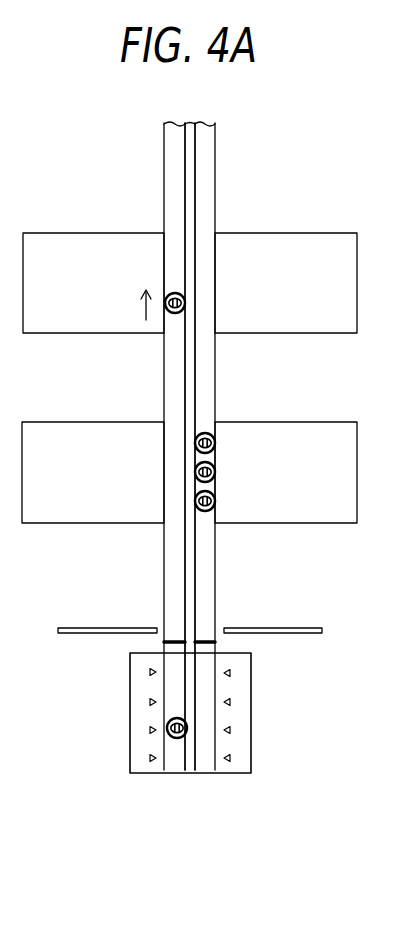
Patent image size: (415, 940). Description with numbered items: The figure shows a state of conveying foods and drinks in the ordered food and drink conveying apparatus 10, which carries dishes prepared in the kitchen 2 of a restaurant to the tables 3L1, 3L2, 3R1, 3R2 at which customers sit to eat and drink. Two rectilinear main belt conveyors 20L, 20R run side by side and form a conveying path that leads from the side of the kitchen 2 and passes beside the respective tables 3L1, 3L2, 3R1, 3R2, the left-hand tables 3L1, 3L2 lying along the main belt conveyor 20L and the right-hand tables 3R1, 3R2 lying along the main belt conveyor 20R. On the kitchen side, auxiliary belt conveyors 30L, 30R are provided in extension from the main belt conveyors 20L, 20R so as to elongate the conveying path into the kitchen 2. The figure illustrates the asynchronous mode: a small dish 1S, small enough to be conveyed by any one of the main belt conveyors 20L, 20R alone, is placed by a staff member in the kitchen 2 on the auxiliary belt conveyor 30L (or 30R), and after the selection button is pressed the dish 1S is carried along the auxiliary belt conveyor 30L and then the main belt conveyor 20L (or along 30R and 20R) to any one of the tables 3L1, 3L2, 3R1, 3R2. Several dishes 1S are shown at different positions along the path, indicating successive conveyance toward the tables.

The ordered food and drink conveying apparatus 10 is at (304, 580).
The main belt conveyor 20L is at (164, 165).
The main belt conveyor 20R is at (216, 158).
The table 3L2 is at (97, 233).
The table 3R2 is at (283, 233).
The table 3L1 is at (97, 422).
The table 3R1 is at (285, 422).
The small dish 1S is at (172, 314).
The auxiliary belt conveyor 30L is at (164, 645).
The auxiliary belt conveyor 30R is at (217, 645).
The kitchen 2 is at (296, 742).